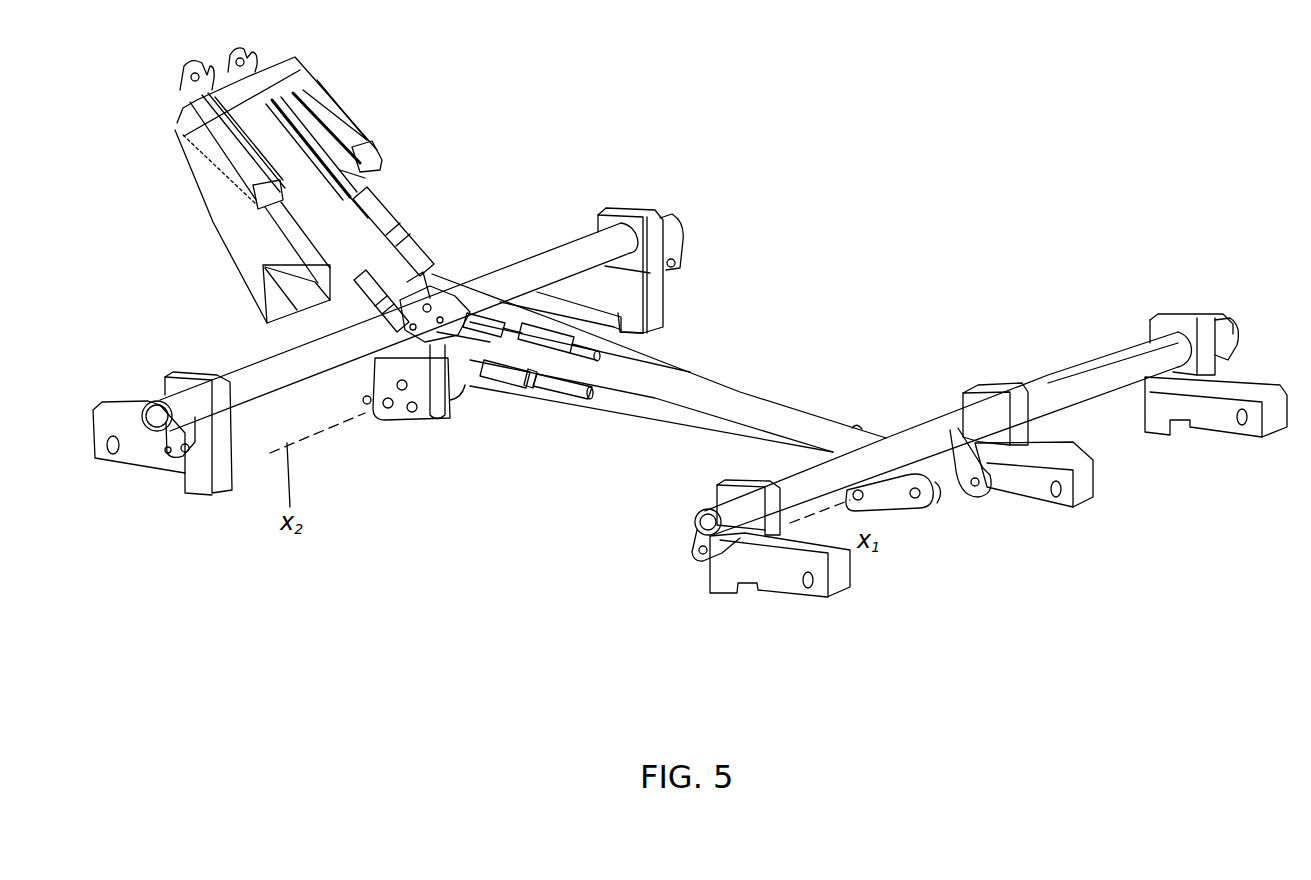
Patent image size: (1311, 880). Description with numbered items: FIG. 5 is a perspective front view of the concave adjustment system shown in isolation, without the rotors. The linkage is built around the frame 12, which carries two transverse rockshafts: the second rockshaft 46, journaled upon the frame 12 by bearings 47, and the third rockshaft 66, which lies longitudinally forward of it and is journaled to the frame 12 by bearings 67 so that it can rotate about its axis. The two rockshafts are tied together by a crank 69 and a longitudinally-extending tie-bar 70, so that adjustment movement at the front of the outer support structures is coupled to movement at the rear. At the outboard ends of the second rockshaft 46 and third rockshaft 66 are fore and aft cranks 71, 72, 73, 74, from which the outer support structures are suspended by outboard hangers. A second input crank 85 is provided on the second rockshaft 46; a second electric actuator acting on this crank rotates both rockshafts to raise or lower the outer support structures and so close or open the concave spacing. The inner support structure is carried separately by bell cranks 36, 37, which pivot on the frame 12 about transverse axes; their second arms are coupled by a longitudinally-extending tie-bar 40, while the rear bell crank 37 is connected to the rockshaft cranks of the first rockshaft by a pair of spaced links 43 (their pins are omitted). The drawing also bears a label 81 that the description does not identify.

The frame 12 is at (213, 220).
The bell crank 36 is at (898, 510).
The bell crank 37 is at (390, 420).
The tie-bar 40 is at (640, 408).
The links 43 is at (437, 390).
The second rockshaft 46 is at (518, 265).
The bearings 47 is at (183, 377).
The third rockshaft 66 is at (1098, 363).
The bearings 67 is at (723, 483).
The crank 69 is at (960, 457).
The tie-bar 70 is at (745, 408).
The fore and aft crank 71 is at (168, 460).
The fore and aft crank 72 is at (695, 556).
The fore and aft crank 73 is at (687, 250).
The fore and aft crank 74 is at (1220, 357).
The rail 81 is at (370, 170).
The second input crank 85 is at (374, 363).